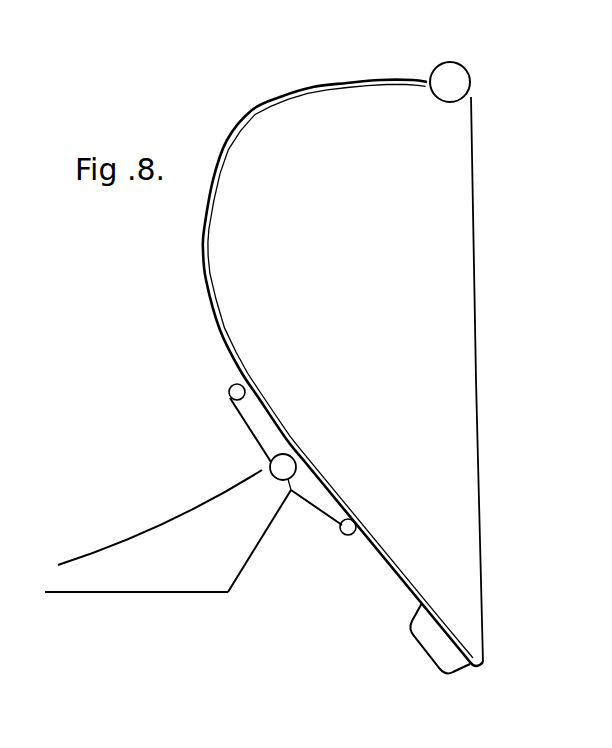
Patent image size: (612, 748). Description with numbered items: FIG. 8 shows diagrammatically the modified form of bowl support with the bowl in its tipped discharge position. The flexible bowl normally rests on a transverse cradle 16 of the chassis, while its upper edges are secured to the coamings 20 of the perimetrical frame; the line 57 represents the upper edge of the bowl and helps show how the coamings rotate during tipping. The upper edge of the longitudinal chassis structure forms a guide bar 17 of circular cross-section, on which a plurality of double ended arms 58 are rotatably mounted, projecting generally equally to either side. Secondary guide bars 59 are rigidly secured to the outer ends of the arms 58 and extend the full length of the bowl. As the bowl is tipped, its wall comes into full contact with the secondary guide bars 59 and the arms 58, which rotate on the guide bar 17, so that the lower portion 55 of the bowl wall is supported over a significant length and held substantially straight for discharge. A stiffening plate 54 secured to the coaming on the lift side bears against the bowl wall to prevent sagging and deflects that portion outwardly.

The transverse cradle 16 is at (102, 635).
The guide bar 17 is at (270, 466).
The coaming 20 is at (430, 647).
The stiffening plate 54 is at (343, 337).
The lower portion of the wall of the bowl 55 is at (395, 570).
The line representing the upper edge of the bowl 57 is at (433, 382).
The double ended arm 58 is at (272, 432).
The secondary guide bar 59 is at (228, 385).